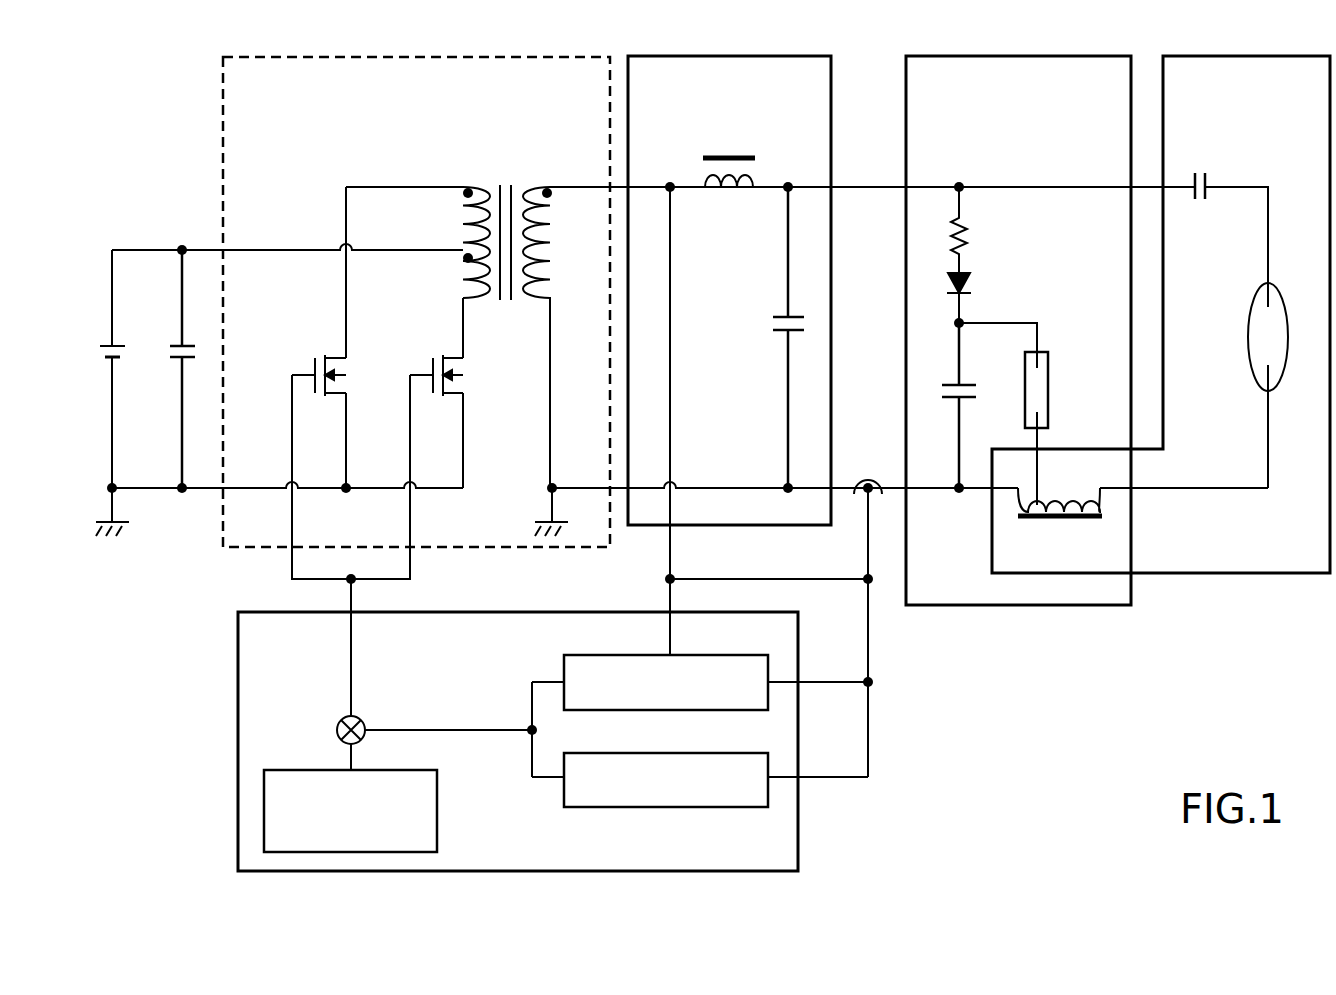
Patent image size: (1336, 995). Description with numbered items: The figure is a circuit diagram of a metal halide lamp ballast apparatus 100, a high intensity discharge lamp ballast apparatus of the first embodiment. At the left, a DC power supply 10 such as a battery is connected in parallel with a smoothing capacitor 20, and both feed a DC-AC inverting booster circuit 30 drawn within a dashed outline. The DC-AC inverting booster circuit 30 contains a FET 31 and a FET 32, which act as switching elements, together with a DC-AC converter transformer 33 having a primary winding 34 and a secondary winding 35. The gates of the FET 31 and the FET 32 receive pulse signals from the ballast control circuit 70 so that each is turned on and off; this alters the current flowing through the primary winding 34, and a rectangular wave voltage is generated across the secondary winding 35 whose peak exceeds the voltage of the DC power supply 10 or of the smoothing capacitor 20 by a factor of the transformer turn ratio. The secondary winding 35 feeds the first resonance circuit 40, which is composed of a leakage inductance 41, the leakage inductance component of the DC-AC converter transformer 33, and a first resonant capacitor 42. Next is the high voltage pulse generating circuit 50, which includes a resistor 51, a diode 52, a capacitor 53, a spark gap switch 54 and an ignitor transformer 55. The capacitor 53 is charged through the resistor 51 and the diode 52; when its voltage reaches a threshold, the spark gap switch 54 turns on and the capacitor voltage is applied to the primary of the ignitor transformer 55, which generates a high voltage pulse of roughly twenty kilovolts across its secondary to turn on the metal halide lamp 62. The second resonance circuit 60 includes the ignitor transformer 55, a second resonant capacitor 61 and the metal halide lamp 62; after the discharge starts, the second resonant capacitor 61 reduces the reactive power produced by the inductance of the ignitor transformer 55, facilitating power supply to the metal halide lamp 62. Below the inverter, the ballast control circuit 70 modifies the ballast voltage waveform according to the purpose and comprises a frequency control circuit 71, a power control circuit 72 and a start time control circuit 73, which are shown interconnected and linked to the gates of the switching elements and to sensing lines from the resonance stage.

The DC power supply 10 is at (103, 341).
The smoothing capacitor 20 is at (169, 341).
The DC-AC inverting booster circuit 30 is at (511, 57).
The FET 31 is at (349, 378).
The FET 32 is at (467, 378).
The DC-AC converter transformer 33 is at (505, 183).
The primary winding 34 is at (465, 186).
The secondary winding 35 is at (548, 186).
The first resonance circuit 40 is at (774, 57).
The leakage inductance 41 is at (763, 172).
The first resonant capacitor 42 is at (766, 326).
The high voltage pulse generating circuit 50 is at (1072, 57).
The resistor 51 is at (977, 234).
The diode 52 is at (977, 282).
The capacitor 53 is at (968, 378).
The spark gap switch 54 is at (1052, 393).
The ignitor transformer 55 is at (1062, 519).
The second resonance circuit 60 is at (1267, 57).
The second resonant capacitor 61 is at (1201, 205).
The metal halide lamp 62 is at (1245, 341).
The ballast control circuit 70 is at (802, 838).
The frequency control circuit 71 is at (439, 815).
The power control circuit 72 is at (725, 655).
The start time control circuit 73 is at (725, 753).
The metal halide lamp ballast apparatus 100 is at (700, 449).